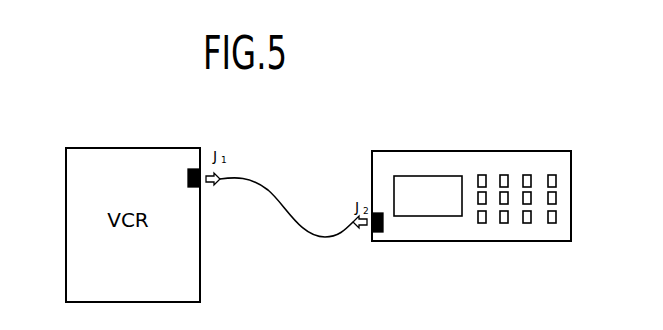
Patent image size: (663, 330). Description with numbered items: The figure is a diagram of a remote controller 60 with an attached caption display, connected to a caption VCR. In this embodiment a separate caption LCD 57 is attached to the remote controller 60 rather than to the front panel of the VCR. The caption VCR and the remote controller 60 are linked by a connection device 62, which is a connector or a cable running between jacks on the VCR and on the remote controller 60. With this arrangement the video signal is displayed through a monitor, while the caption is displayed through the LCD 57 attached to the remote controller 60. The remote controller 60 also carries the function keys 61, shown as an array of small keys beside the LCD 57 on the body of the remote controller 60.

The LCD 57 is at (430, 176).
The remote controller 60 is at (480, 151).
The function keys 61 is at (483, 223).
The connection device 62 is at (268, 190).